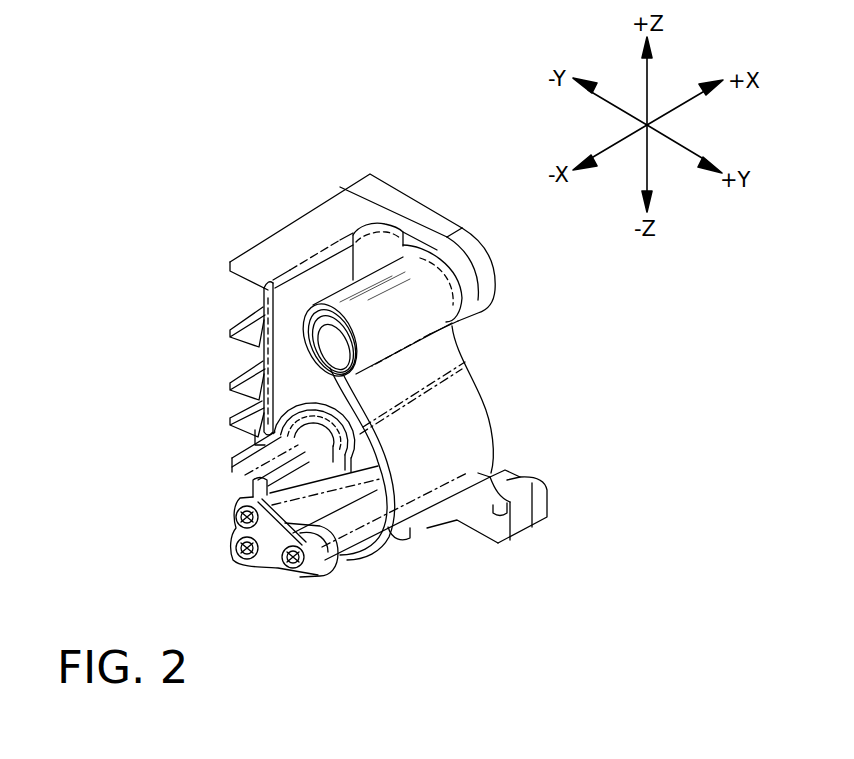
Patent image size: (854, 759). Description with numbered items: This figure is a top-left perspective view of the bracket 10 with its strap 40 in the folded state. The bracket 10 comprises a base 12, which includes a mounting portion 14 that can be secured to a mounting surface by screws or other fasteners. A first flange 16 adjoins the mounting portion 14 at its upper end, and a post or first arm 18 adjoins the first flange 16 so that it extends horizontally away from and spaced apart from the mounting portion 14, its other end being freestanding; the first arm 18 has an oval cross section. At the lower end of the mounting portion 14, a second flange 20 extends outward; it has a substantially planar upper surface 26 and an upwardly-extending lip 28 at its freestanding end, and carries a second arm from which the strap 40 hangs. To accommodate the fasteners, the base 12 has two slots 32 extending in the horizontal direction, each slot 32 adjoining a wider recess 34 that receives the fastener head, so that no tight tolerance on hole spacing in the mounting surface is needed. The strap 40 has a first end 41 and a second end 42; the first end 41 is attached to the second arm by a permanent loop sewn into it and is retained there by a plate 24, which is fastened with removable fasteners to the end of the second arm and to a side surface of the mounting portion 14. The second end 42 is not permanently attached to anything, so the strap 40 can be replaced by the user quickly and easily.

The bracket 10 is at (205, 111).
The base 12 is at (316, 198).
The mounting portion 14 is at (280, 254).
The first flange 16 is at (410, 208).
The first arm 18 is at (324, 347).
The second flange 20 is at (562, 531).
The plate 24 is at (272, 550).
The upper surface 26 is at (497, 480).
The lip 28 is at (533, 483).
The slots 32 is at (267, 440).
The recess 34 is at (257, 468).
The strap 40 is at (492, 381).
The first end 41 is at (348, 562).
The second end 42 is at (407, 532).